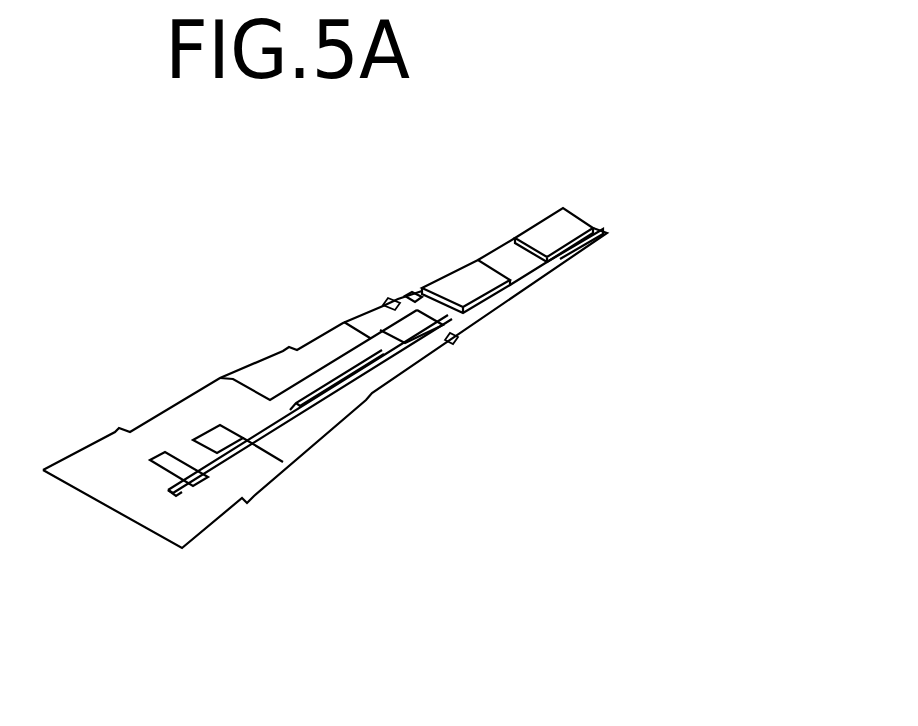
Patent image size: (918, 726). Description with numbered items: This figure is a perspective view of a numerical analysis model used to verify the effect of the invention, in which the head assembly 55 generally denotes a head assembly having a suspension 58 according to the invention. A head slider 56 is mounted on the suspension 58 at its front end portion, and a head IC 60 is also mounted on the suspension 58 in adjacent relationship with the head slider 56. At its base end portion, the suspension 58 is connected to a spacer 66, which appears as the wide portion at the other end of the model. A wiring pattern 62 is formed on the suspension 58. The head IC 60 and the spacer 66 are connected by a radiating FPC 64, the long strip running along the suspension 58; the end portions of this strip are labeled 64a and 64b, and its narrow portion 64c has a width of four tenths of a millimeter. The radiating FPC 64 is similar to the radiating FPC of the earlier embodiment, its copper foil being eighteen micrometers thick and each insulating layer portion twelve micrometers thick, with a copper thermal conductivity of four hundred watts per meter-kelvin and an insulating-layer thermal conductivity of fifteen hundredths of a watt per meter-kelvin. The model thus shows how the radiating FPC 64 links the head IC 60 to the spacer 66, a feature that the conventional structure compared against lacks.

The head assembly 55 is at (470, 366).
The head slider 56 is at (540, 237).
The suspension 58 is at (275, 372).
The head IC 60 is at (447, 285).
The wiring pattern 62 is at (338, 368).
The radiating FPC 64 is at (332, 405).
The conductive line end portion 64a is at (412, 294).
The conductive line end portion 64b is at (183, 490).
The narrow portion 64c is at (372, 366).
The spacer 66 is at (113, 458).